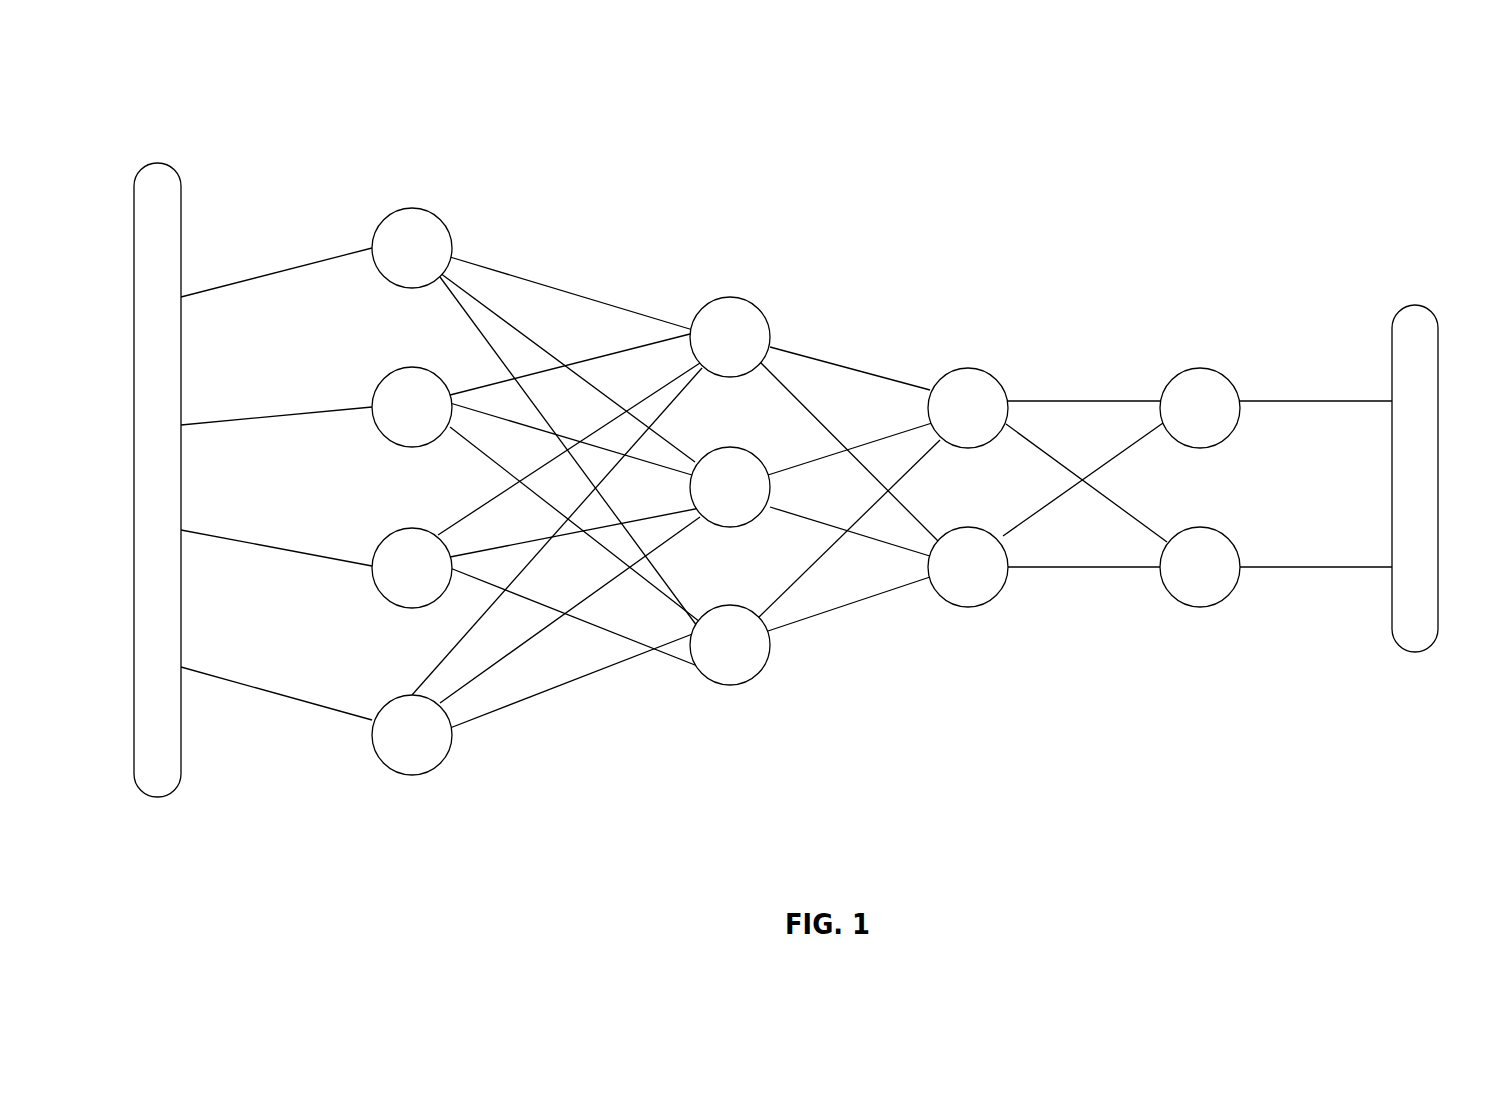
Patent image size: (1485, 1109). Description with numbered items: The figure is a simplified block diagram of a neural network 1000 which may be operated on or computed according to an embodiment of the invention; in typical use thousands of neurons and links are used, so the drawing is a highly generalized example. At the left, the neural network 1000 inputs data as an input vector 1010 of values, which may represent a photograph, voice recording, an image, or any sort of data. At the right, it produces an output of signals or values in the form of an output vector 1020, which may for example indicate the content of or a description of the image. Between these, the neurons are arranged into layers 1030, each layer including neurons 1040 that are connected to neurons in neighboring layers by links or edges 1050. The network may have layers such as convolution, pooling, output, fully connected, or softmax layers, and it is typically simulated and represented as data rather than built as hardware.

The neural network 1000 is at (213, 46).
The input vector 1010 is at (160, 163).
The output vector 1020 is at (1414, 305).
The layers 1030 is at (368, 204).
The neurons 1040 is at (414, 208).
The links 1050 is at (558, 286).